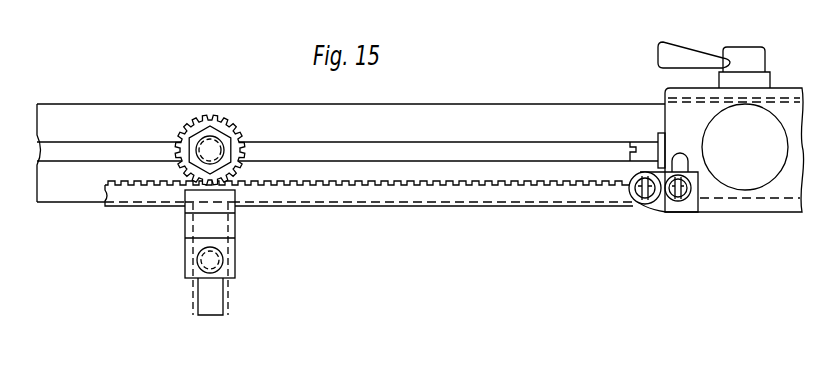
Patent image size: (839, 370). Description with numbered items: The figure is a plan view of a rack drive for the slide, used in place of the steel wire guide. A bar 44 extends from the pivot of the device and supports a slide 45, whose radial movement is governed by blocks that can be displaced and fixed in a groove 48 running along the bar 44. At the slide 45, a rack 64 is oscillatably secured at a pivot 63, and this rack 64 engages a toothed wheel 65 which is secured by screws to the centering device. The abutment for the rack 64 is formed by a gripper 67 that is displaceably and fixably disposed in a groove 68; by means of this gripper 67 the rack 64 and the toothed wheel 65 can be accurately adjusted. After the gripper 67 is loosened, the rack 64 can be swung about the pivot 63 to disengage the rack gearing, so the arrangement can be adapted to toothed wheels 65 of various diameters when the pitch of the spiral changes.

The bar 44 is at (465, 107).
The slide 45 is at (783, 193).
The groove 48 is at (550, 145).
The pivot 63 is at (640, 201).
The rack 64 is at (407, 198).
The toothed wheel 65 is at (220, 122).
The gripper 67 is at (218, 227).
The groove 68 is at (218, 300).